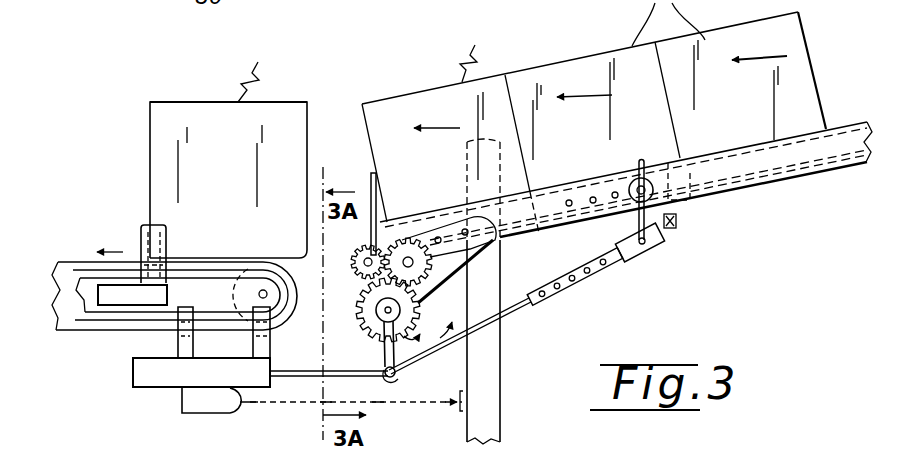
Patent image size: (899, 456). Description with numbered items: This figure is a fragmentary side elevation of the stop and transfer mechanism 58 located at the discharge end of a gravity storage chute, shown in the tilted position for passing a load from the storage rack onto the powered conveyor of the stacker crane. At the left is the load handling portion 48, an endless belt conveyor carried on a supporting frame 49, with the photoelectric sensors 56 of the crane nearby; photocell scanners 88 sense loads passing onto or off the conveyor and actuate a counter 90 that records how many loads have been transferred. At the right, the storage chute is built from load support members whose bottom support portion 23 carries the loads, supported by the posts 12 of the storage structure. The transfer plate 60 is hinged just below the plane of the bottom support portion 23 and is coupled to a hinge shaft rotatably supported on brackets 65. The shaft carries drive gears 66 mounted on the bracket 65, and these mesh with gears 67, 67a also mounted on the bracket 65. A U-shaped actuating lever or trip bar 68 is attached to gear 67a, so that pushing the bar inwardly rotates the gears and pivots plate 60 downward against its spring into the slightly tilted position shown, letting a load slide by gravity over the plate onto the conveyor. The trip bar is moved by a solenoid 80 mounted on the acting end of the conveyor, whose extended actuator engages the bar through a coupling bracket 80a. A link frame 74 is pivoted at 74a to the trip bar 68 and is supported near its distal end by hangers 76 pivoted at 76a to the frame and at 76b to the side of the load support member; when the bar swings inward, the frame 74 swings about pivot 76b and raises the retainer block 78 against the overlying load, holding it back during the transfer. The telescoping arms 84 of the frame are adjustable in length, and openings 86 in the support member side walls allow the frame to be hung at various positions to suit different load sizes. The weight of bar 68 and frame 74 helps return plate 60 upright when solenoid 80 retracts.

The posts 12 is at (502, 365).
The bottom support portion 23 is at (834, 175).
The load handling portion 48 is at (168, 287).
The supporting frame 49 is at (90, 303).
The photoelectric sensors 56 is at (192, 403).
The transfer mechanism 58 is at (362, 233).
The plate-like member 60 is at (369, 184).
The brackets 65 is at (455, 265).
The drive gears 66 is at (377, 246).
The gear 67 is at (418, 240).
The gear 67a is at (448, 290).
The actuating lever 68 is at (385, 349).
The link frame 74 is at (517, 311).
The pivot 74a is at (398, 372).
The hangers 76 is at (643, 190).
The pivot 76a is at (650, 242).
The pivot 76b is at (641, 158).
The retainer block 78 is at (676, 158).
The solenoid 80 is at (254, 374).
The coupling bracket 80a is at (383, 376).
The arms 84 is at (604, 268).
The openings 86 is at (613, 192).
The photocell scanners 88 is at (167, 228).
The counter 90 is at (157, 296).